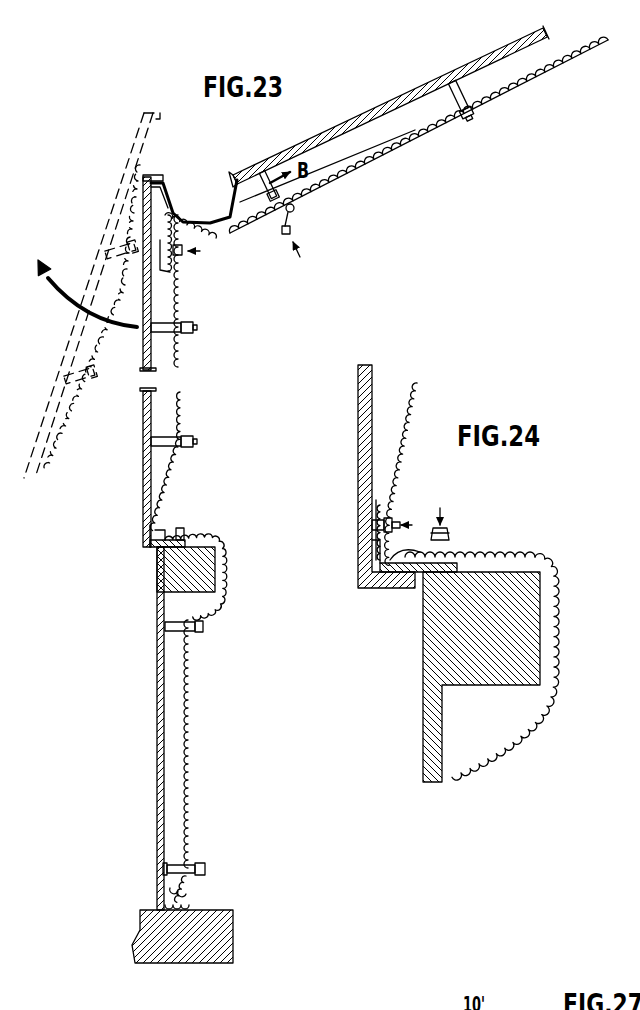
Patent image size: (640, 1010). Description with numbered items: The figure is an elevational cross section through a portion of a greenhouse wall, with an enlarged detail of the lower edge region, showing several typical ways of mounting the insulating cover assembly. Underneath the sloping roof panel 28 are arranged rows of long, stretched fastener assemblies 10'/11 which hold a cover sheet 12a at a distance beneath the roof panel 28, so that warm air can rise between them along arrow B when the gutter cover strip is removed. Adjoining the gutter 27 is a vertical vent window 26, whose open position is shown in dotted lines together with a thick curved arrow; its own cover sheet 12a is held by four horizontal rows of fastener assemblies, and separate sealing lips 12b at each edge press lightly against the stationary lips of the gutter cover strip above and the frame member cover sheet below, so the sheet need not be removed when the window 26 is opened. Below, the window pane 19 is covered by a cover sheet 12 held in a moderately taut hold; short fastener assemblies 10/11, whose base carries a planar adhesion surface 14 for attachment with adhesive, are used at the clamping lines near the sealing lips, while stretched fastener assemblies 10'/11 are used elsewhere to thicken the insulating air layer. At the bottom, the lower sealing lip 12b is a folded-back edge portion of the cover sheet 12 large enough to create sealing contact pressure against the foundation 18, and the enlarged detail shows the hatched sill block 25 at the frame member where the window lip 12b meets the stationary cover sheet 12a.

In FIG. 23, the fastener base 10 is at (156, 845).
In FIG. 23, the stretched fastener assembly 10' is at (307, 369).
In FIG. 23, the fastener assembly 11 is at (470, 118).
In FIG. 24, the fastener assembly 11 is at (445, 533).
In FIG. 23, the cover sheet 12 is at (193, 722).
In FIG. 23, the cover sheet 12a is at (412, 142).
In FIG. 24, the cover sheet 12a is at (418, 395).
In FIG. 23, the sealing lip 12b is at (160, 240).
In FIG. 24, the sealing lip 12b is at (408, 525).
In FIG. 23, the planar surface 14 is at (163, 869).
In FIG. 23, the foundation 18 is at (198, 965).
In FIG. 23, the window pane 19 is at (143, 412).
In FIG. 24, the window pane 19 is at (354, 424).
In FIG. 23, the block / sill 25 is at (170, 570).
In FIG. 24, the block / sill 25 is at (440, 622).
In FIG. 23, the vent window 26 is at (86, 242).
In FIG. 23, the gutter 27 is at (172, 212).
In FIG. 23, the roof panel 28 is at (410, 92).